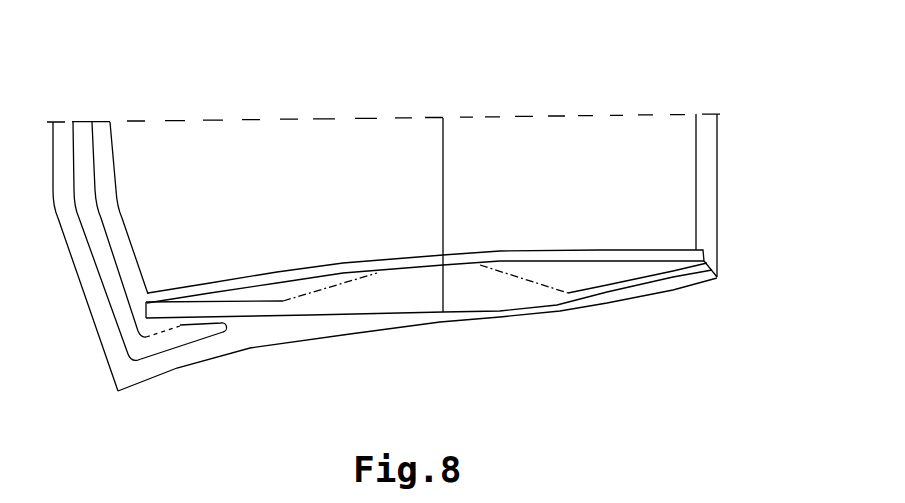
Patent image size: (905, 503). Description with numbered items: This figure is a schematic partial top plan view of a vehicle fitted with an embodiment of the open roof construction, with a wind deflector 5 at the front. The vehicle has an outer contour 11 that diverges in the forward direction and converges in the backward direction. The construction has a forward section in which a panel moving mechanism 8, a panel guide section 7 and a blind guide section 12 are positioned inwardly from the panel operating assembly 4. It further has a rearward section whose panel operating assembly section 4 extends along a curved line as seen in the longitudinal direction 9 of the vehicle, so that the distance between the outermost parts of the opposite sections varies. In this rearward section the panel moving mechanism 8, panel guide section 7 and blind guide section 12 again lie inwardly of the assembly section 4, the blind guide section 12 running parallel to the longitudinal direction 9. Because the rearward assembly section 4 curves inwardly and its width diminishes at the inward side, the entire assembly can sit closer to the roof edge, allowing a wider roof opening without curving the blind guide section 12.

The panel operating assembly 4 is at (345, 328).
The wind deflector 5 is at (79, 133).
The panel guide section 7 is at (248, 312).
The panel moving mechanism 8 is at (408, 293).
The longitudinal direction 9 is at (247, 120).
The outer contour 11 is at (172, 372).
The blind guide section 12 is at (650, 223).